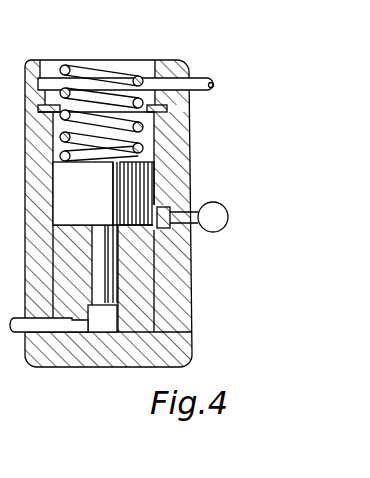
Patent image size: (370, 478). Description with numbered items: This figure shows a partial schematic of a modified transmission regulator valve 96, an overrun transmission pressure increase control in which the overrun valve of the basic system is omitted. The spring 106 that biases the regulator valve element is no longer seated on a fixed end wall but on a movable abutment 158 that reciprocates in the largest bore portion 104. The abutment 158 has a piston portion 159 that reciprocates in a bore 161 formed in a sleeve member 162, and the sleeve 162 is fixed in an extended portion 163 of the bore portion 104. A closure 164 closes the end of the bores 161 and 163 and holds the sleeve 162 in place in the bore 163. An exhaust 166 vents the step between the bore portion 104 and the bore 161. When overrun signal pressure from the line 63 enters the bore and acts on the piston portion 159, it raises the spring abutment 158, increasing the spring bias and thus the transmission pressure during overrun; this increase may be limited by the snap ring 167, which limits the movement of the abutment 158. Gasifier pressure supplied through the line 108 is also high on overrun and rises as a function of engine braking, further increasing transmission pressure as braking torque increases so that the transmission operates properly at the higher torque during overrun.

The transmission regulator valve 96 is at (128, 51).
The bore portion 104 is at (57, 62).
The line 108 is at (214, 85).
The snap ring 167 is at (162, 108).
The spring 106 is at (143, 150).
The movable abutment 158 is at (147, 173).
The exhaust 166 is at (221, 206).
The sleeve member 162 is at (145, 268).
The extended portion of bore 163 is at (150, 306).
The piston portion 159 is at (98, 241).
The line 63 is at (50, 323).
The closure 164 is at (82, 352).
The bore 161 is at (106, 322).